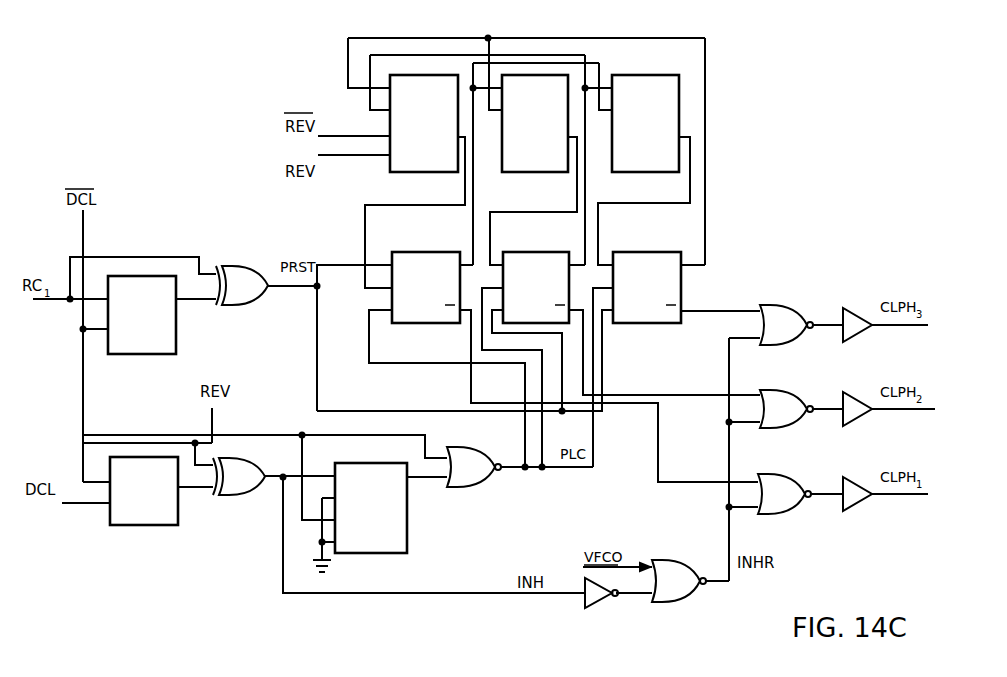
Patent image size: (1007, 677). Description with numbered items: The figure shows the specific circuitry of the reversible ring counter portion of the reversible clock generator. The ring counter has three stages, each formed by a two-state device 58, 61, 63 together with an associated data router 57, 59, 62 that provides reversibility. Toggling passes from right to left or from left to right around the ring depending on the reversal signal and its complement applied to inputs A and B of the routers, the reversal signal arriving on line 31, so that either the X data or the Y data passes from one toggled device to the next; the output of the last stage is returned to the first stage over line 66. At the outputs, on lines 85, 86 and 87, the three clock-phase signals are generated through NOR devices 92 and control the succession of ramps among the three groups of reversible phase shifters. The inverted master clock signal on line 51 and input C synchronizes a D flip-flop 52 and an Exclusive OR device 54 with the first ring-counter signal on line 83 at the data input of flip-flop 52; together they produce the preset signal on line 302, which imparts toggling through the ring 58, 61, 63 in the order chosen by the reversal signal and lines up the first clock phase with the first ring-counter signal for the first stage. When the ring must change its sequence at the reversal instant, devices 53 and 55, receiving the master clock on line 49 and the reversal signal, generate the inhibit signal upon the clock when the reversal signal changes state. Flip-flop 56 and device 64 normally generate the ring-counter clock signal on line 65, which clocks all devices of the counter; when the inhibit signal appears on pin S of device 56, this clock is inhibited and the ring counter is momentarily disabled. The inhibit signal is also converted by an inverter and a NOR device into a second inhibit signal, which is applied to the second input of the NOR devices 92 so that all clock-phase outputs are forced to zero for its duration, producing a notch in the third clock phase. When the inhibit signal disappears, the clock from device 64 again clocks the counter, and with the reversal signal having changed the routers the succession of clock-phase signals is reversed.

The REV signal line 31 is at (350, 157).
The DCL input line 49 is at (76, 507).
The master clock line 51 is at (85, 214).
The D flip-flop 52 is at (137, 356).
The D flip-flop 53 is at (147, 526).
The Exclusive OR device 54 is at (252, 268).
The Exclusive OR device 55 is at (229, 496).
The D flip-flop 56 is at (408, 538).
The data router 57 is at (422, 173).
The two-state device 58 is at (411, 252).
The data router 59 is at (551, 173).
The two-state device 61 is at (546, 251).
The data router 62 is at (627, 173).
The two-state device 63 is at (653, 251).
The Exclusive OR device 64 is at (463, 486).
The PLC line 65 is at (572, 470).
The feedback line 66 is at (705, 172).
The RC1 signal line 83 is at (55, 301).
The output line 85 is at (897, 496).
The output line 86 is at (897, 411).
The output line 87 is at (897, 327).
The NOR devices 92 is at (790, 305).
The preset signal line 302 is at (288, 288).